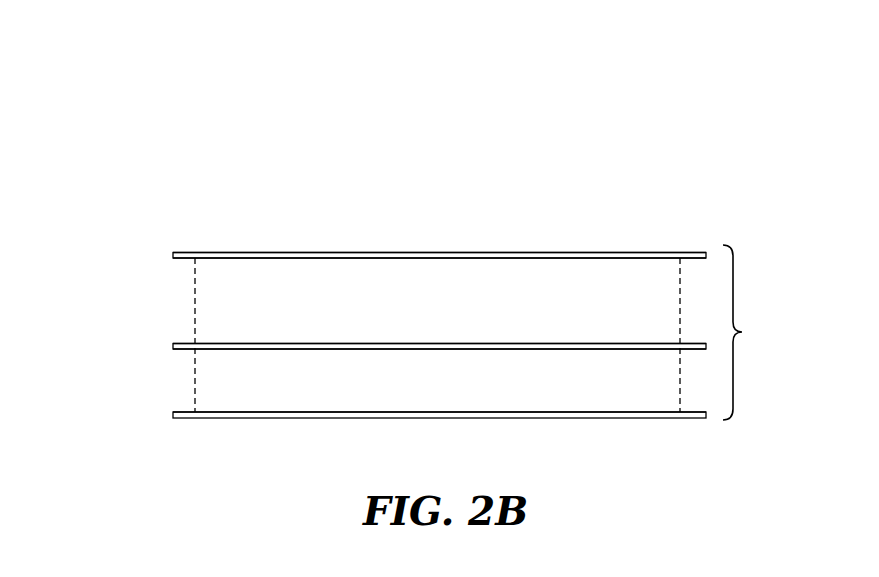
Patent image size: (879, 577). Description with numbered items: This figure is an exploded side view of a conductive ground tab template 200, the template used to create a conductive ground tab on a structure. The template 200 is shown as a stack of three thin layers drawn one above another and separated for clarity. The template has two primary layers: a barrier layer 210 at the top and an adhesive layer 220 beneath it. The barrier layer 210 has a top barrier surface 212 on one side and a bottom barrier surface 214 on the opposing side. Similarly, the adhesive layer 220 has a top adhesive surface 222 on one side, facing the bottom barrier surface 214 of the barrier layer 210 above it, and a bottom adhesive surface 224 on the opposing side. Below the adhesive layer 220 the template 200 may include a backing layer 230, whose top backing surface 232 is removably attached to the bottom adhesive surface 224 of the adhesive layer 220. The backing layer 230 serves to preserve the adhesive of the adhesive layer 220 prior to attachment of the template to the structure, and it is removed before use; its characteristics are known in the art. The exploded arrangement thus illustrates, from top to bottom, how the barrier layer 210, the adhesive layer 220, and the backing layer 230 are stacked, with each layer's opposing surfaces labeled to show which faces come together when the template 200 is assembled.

The conductive ground tab template 200 is at (136, 187).
The barrier layer 210 is at (173, 255).
The top barrier surface 212 is at (484, 250).
The bottom barrier surface 214 is at (390, 260).
The adhesive layer 220 is at (173, 346).
The top adhesive surface 222 is at (575, 341).
The bottom adhesive surface 224 is at (478, 351).
The backing layer 230 is at (173, 414).
The top backing surface 232 is at (330, 409).